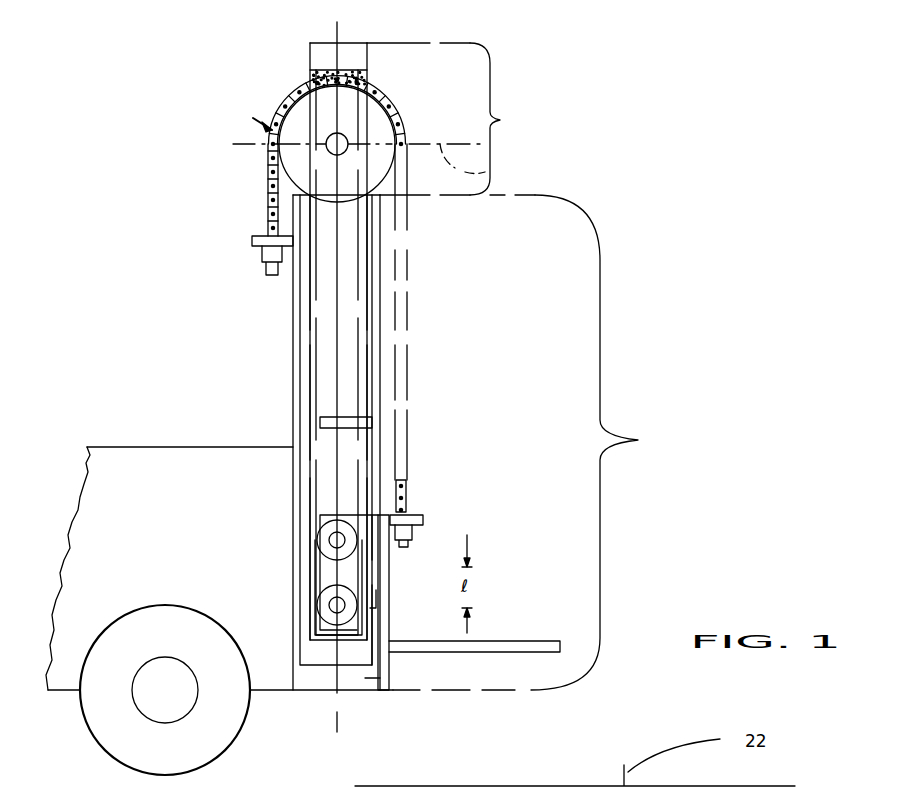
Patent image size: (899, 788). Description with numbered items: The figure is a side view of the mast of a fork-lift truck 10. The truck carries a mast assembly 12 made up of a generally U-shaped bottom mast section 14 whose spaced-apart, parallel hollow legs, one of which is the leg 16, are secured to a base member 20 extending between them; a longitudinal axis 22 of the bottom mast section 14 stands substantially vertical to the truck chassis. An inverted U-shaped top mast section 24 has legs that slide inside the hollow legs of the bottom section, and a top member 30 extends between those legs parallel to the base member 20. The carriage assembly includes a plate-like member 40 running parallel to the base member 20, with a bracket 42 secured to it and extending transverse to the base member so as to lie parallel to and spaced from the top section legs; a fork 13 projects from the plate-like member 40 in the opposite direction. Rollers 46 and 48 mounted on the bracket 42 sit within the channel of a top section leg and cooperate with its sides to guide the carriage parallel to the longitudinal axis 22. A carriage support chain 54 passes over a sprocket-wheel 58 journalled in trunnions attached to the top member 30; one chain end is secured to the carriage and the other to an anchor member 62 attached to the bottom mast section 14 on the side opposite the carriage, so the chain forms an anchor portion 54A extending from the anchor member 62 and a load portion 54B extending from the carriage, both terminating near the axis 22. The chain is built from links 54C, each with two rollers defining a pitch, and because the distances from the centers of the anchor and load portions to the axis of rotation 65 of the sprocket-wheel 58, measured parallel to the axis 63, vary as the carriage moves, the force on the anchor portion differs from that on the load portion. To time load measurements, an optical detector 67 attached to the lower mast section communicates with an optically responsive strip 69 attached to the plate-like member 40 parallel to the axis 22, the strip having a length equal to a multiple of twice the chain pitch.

The fork-lift truck 10 is at (180, 172).
The mast assembly 12 is at (437, 340).
The fork 13 is at (487, 642).
The bottom mast section 14 is at (585, 442).
The hollow leg 16 is at (337, 490).
The base member 20 is at (365, 678).
The longitudinal axis 22 is at (337, 24).
The top mast section 24 is at (458, 119).
The top member 30 is at (357, 52).
The plate-like member 40 is at (383, 628).
The bracket 42 is at (345, 578).
The roller 46 is at (317, 537).
The roller 48 is at (320, 603).
The carriage support chain 54 is at (408, 238).
The anchor portion 54A is at (265, 185).
The load portion 54B is at (410, 323).
The link 54C is at (242, 120).
The sprocket-wheel 58 is at (380, 135).
The anchor member 62 is at (255, 245).
The axis 63 is at (495, 176).
The axis of rotation 65 is at (343, 143).
The optical detector 67 is at (320, 422).
The optically responsive strip 69 is at (376, 608).